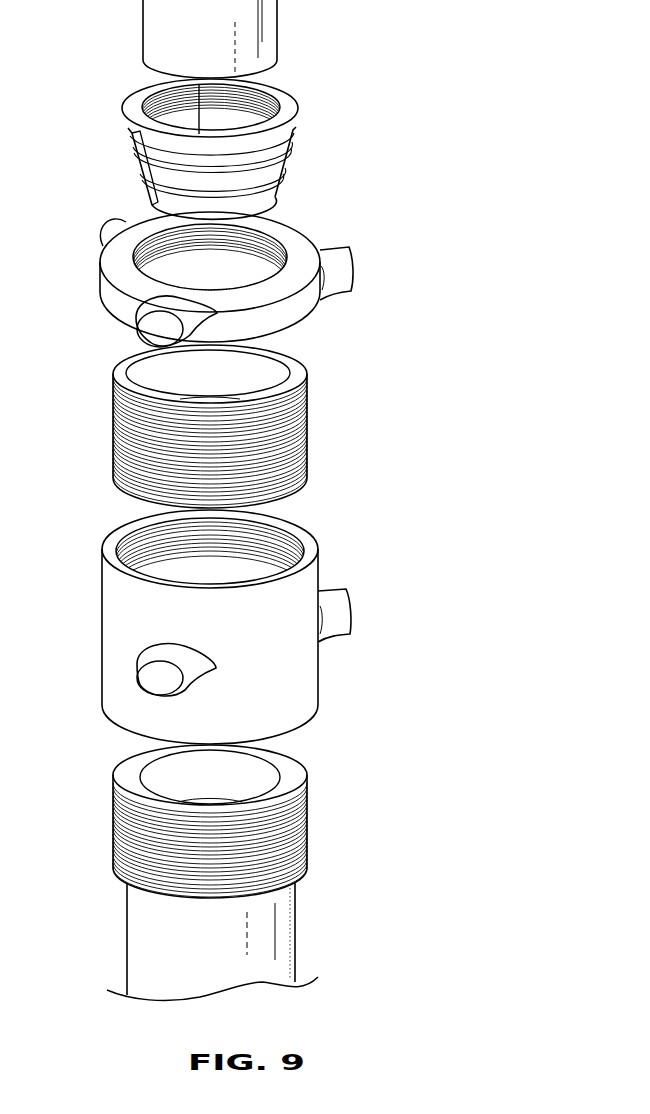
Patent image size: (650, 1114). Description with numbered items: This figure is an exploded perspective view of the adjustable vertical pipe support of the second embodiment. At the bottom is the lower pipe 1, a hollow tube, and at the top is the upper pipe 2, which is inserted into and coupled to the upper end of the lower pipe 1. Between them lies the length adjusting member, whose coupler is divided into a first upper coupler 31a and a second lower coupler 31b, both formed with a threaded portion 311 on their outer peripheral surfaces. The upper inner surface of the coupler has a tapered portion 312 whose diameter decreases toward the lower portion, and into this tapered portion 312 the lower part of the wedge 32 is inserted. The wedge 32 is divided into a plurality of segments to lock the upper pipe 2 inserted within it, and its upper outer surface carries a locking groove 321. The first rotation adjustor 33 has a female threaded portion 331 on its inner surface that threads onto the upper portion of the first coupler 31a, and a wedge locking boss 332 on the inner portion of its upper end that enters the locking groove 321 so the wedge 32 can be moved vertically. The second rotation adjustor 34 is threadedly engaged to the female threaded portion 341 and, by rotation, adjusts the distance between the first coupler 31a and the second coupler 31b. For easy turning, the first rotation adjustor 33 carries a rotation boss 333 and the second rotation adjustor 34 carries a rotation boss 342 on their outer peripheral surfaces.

The lower pipe 1 is at (296, 920).
The upper pipe 2 is at (277, 17).
The first coupler 31a is at (273, 414).
The second coupler 31b is at (335, 830).
The threaded portion 311 is at (118, 402).
The tapered portion 312 is at (277, 372).
The wedge 32 is at (232, 149).
The locking groove 321 is at (132, 140).
The first rotation adjustor 33 is at (285, 271).
The female threaded portion 331 is at (247, 251).
The wedge locking boss 332 is at (280, 233).
The rotation boss 333 is at (355, 262).
The second rotation adjustor 34 is at (280, 613).
The female threaded portion 341 is at (296, 546).
The rotation boss 342 is at (350, 614).